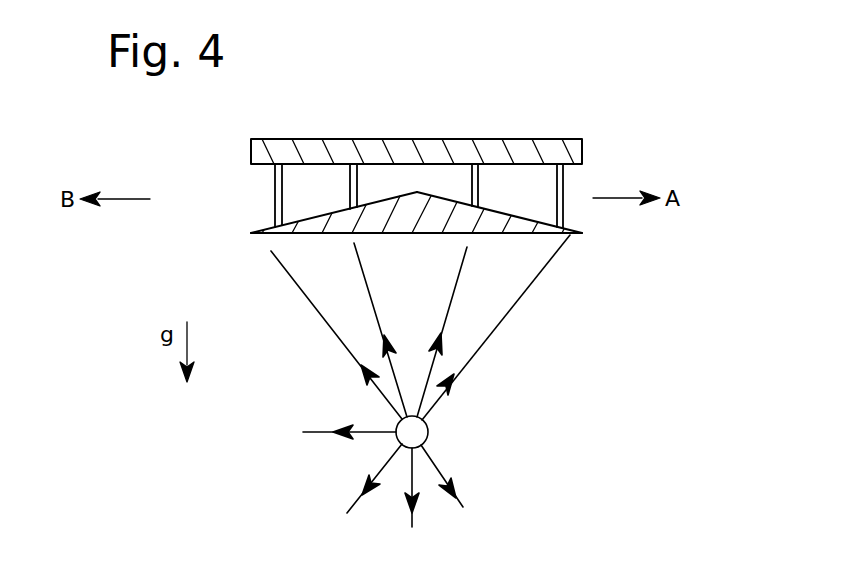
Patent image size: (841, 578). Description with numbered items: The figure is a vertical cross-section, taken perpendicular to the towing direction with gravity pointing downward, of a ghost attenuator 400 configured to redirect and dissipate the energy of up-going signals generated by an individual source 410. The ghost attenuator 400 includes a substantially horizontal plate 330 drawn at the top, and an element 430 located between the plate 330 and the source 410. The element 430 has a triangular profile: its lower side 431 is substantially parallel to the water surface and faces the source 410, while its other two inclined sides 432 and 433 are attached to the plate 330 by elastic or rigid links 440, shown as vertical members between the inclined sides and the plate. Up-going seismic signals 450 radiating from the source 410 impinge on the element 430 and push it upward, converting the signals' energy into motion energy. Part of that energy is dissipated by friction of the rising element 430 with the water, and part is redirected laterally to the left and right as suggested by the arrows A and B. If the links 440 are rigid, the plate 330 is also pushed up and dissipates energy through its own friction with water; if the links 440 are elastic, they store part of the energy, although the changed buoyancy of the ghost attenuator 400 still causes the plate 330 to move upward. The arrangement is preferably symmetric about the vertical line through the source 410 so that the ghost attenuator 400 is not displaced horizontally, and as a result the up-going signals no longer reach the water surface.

The ghost attenuator 400 is at (240, 133).
The cover plate 330 is at (583, 150).
The links 440 is at (348, 205).
The element 430 is at (580, 232).
The side of element 432 is at (378, 201).
The side of element 433 is at (517, 215).
The lower side 431 is at (540, 235).
The up-going seismic signals 450 is at (420, 381).
The individual source 410 is at (428, 432).